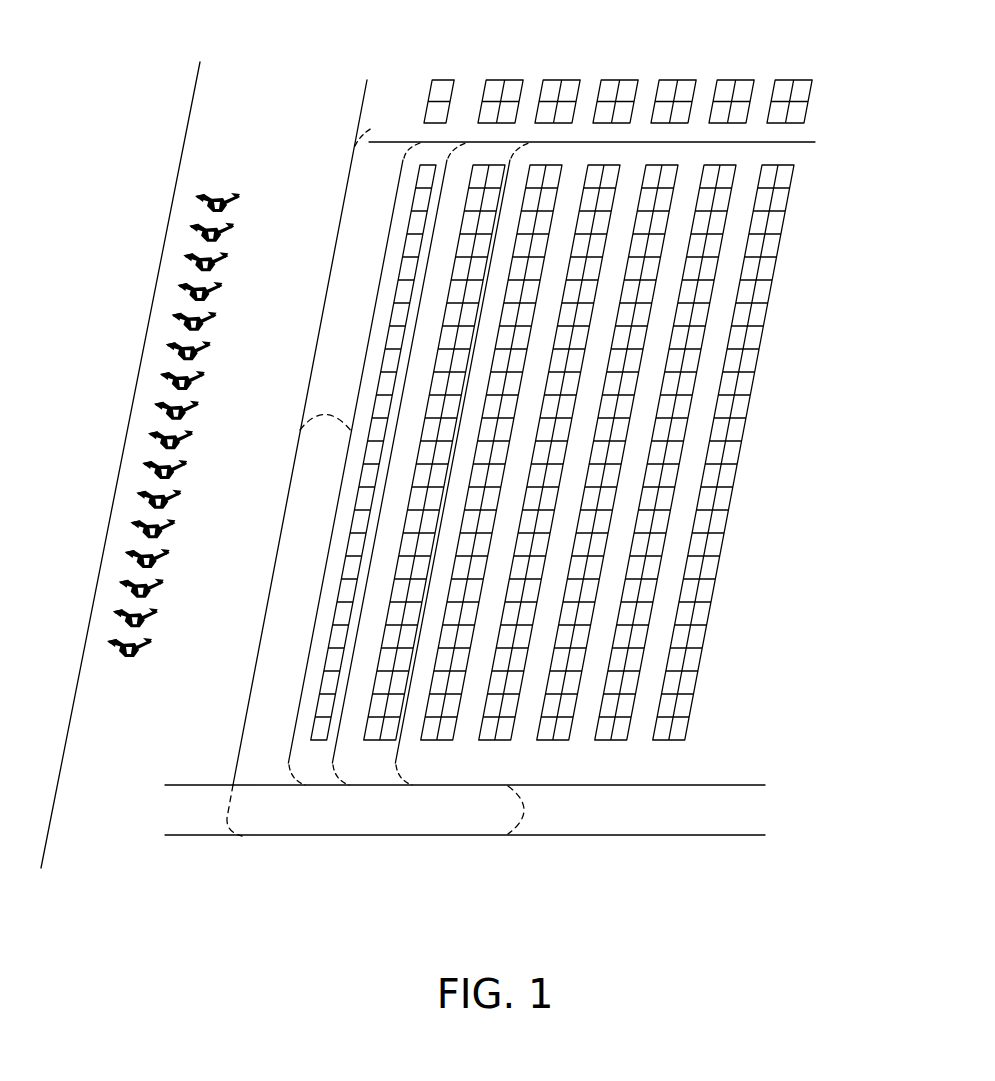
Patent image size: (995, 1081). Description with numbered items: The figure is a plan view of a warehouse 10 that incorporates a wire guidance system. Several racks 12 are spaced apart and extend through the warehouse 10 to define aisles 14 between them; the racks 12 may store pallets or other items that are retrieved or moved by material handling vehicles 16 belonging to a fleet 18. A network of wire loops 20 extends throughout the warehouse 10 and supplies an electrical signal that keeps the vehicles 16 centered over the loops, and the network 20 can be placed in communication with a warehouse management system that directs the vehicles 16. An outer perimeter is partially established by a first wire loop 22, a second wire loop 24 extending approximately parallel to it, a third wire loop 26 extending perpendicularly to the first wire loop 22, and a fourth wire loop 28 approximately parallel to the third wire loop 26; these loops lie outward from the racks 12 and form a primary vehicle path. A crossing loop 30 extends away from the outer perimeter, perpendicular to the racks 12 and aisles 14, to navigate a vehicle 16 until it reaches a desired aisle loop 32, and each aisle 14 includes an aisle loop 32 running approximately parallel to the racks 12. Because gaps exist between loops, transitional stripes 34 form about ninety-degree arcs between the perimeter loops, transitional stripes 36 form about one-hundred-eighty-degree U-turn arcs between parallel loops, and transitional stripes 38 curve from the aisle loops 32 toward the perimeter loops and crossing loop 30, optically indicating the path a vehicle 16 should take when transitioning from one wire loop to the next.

The warehouse 10 is at (271, 66).
The racks 12 is at (427, 172).
The aisles 14 is at (487, 359).
The material handling vehicles 16 is at (178, 289).
The fleet 18 is at (182, 255).
The network of wire loops 20 is at (368, 72).
The first wire loop 22 is at (270, 590).
The second wire loop 24 is at (318, 612).
The third wire loop 26 is at (612, 836).
The fourth wire loop 28 is at (612, 785).
The crossing loop 30 is at (813, 142).
The aisle loop 32 is at (343, 740).
The transitional stripes 34 is at (376, 132).
The transitional stripes 36 is at (318, 418).
The transitional stripes 38 is at (276, 786).